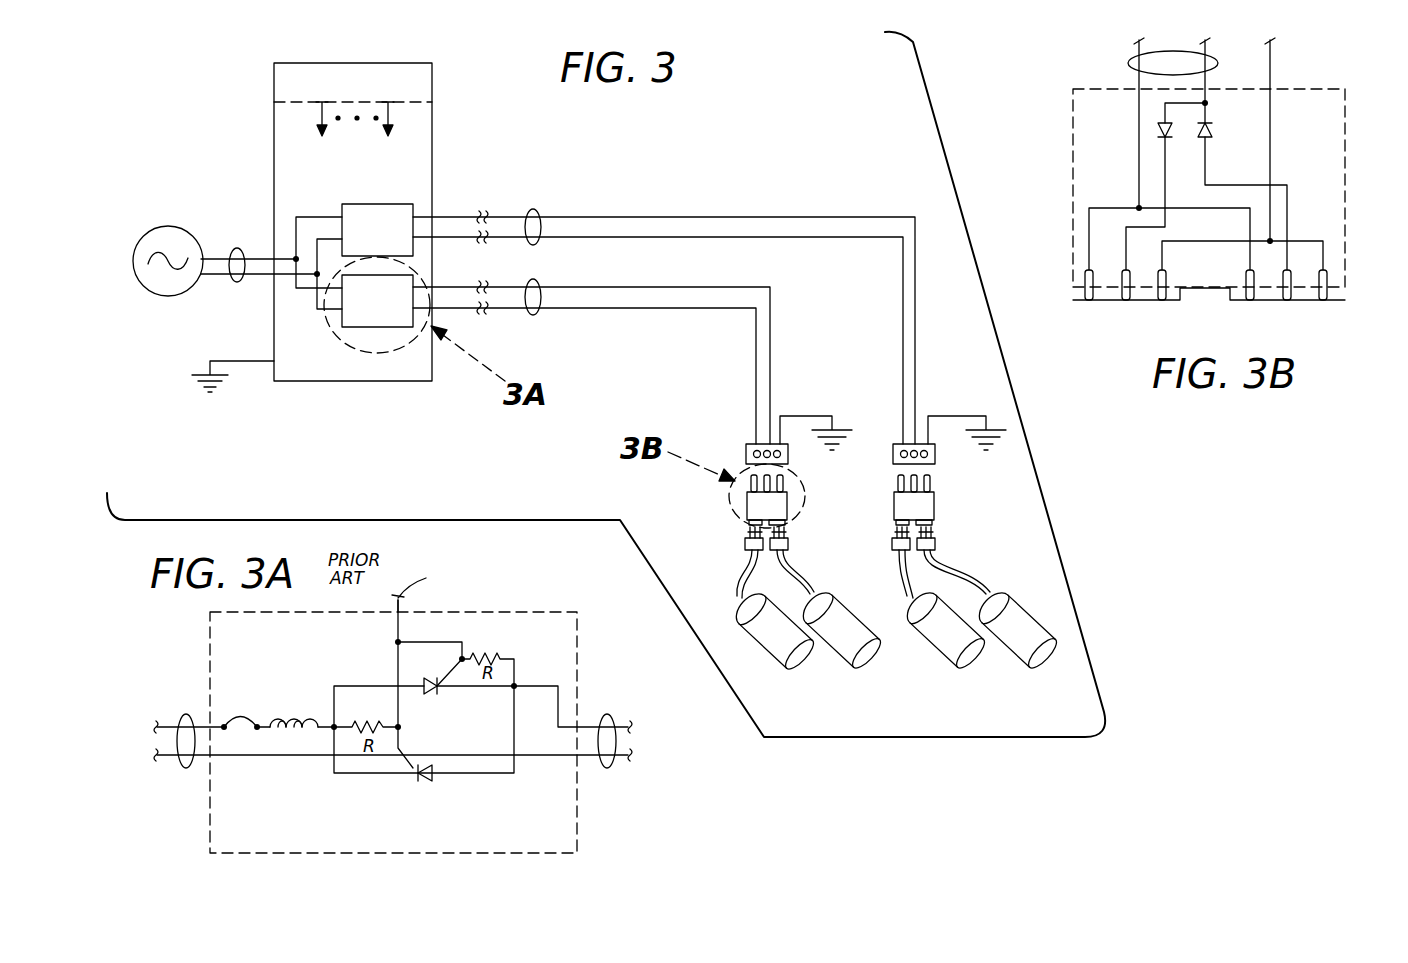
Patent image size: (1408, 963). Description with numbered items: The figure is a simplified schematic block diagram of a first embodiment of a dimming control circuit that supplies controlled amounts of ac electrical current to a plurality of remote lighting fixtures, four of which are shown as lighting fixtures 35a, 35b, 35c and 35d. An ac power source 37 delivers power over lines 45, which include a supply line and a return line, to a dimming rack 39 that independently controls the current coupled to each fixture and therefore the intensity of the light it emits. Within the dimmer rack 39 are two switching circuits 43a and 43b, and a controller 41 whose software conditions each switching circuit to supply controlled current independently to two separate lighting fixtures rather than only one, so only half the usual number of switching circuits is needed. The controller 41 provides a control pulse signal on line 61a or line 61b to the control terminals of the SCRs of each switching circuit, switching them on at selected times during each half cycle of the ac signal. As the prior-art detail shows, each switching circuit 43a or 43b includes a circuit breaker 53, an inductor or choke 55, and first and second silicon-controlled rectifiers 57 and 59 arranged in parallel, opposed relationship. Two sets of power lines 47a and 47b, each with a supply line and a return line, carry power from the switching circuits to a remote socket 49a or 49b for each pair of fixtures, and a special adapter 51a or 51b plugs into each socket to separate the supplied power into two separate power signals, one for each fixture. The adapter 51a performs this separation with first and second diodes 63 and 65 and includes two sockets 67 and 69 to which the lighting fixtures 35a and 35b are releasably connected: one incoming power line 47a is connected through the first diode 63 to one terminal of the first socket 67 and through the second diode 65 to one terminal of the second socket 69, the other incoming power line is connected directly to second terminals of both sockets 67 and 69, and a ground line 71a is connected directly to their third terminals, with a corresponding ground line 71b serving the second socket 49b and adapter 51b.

In FIG. 3, the ac power source 37 is at (168, 226).
In FIG. 3, the lines 45 is at (237, 282).
In FIG. 3A, the lines 45 is at (185, 768).
In FIG. 3, the controller 41 is at (432, 92).
In FIG. 3, the dimming rack 39 is at (418, 134).
In FIG. 3, the line 61b is at (376, 202).
In FIG. 3, the switching circuit 43b is at (413, 210).
In FIG. 3, the line 61a is at (378, 268).
In FIG. 3A, the line 61a is at (429, 584).
In FIG. 3, the switching circuit 43a is at (414, 280).
In FIG. 3A, the switching circuit 43a is at (233, 853).
In FIG. 3, the power lines 47b is at (536, 209).
In FIG. 3, the power lines 47a is at (536, 279).
In FIG. 3A, the power lines 47a is at (607, 768).
In FIG. 3B, the power lines 47a is at (1128, 63).
In FIG. 3, the ground line 71a is at (815, 416).
In FIG. 3B, the ground line 71a is at (1270, 60).
In FIG. 3, the ground line 71b is at (968, 416).
In FIG. 3, the remote socket 49a is at (746, 452).
In FIG. 3, the remote socket 49b is at (935, 456).
In FIG. 3, the adapter 51a is at (747, 505).
In FIG. 3B, the adapter 51a is at (1345, 116).
In FIG. 3, the adapter 51b is at (894, 505).
In FIG. 3, the lighting fixture 35a is at (784, 663).
In FIG. 3, the lighting fixture 35b is at (851, 662).
In FIG. 3, the lighting fixture 35c is at (955, 662).
In FIG. 3, the lighting fixture 35d is at (1027, 662).
In FIG. 3A, the circuit breaker 53 is at (240, 714).
In FIG. 3A, the inductor or choke 55 is at (300, 713).
In FIG. 3A, the first silicon-controlled rectifier 57 is at (430, 692).
In FIG. 3A, the second silicon-controlled rectifier 59 is at (420, 778).
In FIG. 3B, the first diode 63 is at (1156, 130).
In FIG. 3B, the second diode 65 is at (1214, 130).
In FIG. 3B, the first socket 67 is at (1073, 300).
In FIG. 3B, the second socket 69 is at (1340, 300).